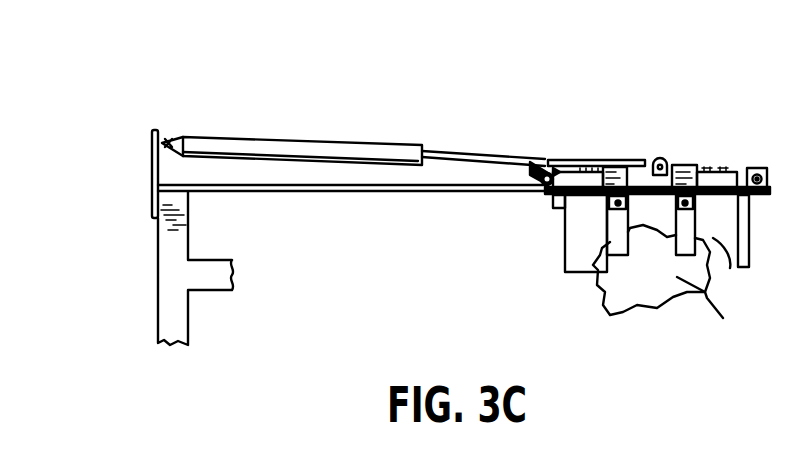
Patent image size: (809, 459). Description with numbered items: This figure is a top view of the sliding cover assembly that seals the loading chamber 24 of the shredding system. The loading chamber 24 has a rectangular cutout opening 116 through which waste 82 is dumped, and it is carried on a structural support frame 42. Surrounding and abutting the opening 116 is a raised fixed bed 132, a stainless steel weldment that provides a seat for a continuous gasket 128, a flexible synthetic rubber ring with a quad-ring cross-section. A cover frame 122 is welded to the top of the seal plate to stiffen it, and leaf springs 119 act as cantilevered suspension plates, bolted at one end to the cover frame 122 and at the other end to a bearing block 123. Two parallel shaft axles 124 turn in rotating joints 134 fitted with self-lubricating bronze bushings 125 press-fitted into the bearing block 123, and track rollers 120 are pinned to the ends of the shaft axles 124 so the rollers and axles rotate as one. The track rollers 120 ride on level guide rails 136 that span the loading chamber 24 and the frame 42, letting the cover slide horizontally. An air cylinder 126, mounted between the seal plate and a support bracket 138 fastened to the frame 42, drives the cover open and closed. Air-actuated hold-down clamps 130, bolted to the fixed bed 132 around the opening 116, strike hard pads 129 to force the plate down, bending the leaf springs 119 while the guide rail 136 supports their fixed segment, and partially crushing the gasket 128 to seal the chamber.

The loading chamber 24 is at (730, 268).
The structural support frame 42 is at (172, 233).
The waste 82 is at (723, 318).
The rectangular cutout opening 116 is at (740, 246).
The leaf springs 119 is at (558, 168).
The track rollers 120 is at (551, 163).
The cover frame 122 is at (639, 168).
The bearing block 123 is at (541, 181).
The shaft axles 124 is at (543, 168).
The bushings 125 is at (529, 193).
The air cylinder 126 is at (202, 134).
The continuous gasket 128 is at (547, 196).
The hard pads 129 is at (592, 165).
The hold-down clamps 130 is at (690, 164).
The fixed bed 132 is at (552, 198).
The rotating joints 134 is at (537, 174).
The guide rails 136 is at (233, 193).
The support bracket 138 is at (151, 167).